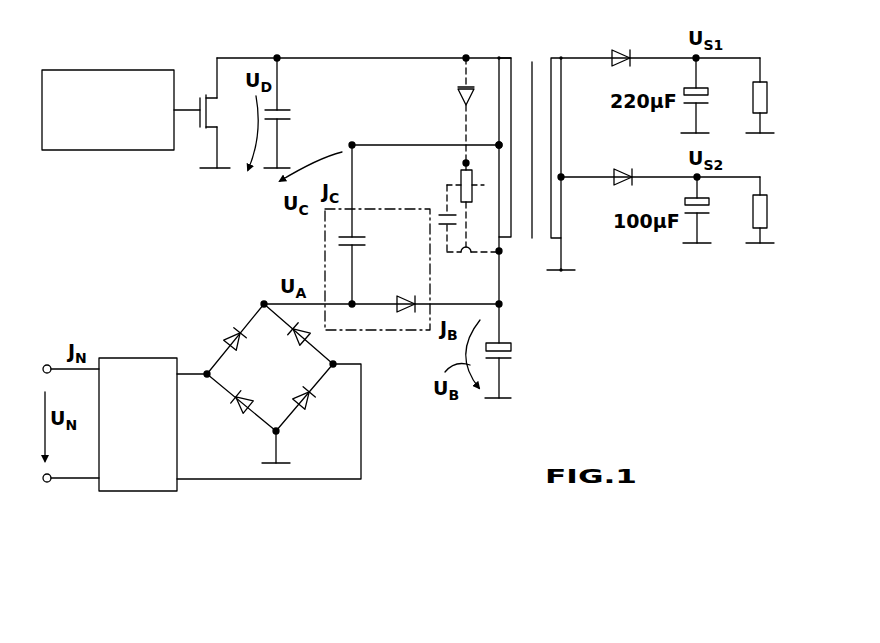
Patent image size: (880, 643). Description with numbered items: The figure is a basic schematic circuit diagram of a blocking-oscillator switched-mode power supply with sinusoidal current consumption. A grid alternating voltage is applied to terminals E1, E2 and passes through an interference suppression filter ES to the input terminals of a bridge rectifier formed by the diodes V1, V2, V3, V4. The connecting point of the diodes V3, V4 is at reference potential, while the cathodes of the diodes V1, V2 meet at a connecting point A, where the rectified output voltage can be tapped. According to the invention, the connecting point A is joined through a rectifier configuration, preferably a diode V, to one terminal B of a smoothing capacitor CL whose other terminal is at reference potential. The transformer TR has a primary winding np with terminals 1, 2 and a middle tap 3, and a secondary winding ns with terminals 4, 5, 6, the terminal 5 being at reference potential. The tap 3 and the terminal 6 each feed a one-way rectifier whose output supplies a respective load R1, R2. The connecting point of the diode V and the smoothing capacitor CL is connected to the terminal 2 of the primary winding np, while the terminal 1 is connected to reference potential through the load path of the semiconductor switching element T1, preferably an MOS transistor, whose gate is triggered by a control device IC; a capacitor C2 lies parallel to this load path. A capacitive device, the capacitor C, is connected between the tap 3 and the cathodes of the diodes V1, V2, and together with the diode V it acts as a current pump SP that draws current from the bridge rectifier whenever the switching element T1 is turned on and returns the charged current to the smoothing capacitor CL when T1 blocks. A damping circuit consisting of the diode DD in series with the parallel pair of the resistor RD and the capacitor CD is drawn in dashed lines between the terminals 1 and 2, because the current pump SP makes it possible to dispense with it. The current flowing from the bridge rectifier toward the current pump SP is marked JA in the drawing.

The control device IC is at (121, 110).
The semiconductor switching element T1 is at (211, 113).
The capacitor C2 is at (300, 113).
The capacitive device C is at (378, 226).
The current pump SP is at (376, 332).
The diode V is at (396, 295).
The damping diode DD is at (448, 110).
The damping resistor RD is at (461, 185).
The damping capacitor CD is at (469, 235).
The transformer TR is at (514, 160).
The primary winding np is at (498, 92).
The secondary winding ns is at (562, 88).
The terminal of the primary winding 1 is at (495, 46).
The terminal of the primary winding 2 is at (510, 261).
The middle tap of the primary winding 3 is at (491, 132).
The terminal of the secondary winding 4 is at (567, 46).
The terminal of the secondary winding 5 is at (554, 263).
The terminal of the secondary winding 6 is at (571, 161).
The terminal of the smoothing capacitor B is at (511, 306).
The connecting point of the diodes V1 and V2 A is at (262, 302).
The smoothing capacitor CL is at (534, 360).
The load R1 is at (749, 95).
The load R2 is at (749, 210).
The interference suppression filter ES is at (138, 424).
The terminal of the grid alternating voltage E1 is at (65, 356).
The terminal of the grid alternating voltage E2 is at (68, 495).
The diode of the bridge rectifier V1 is at (233, 339).
The diode of the bridge rectifier V2 is at (298, 338).
The diode of the bridge rectifier V3 is at (241, 405).
The diode of the bridge rectifier V4 is at (308, 398).
The current path A JA is at (337, 315).